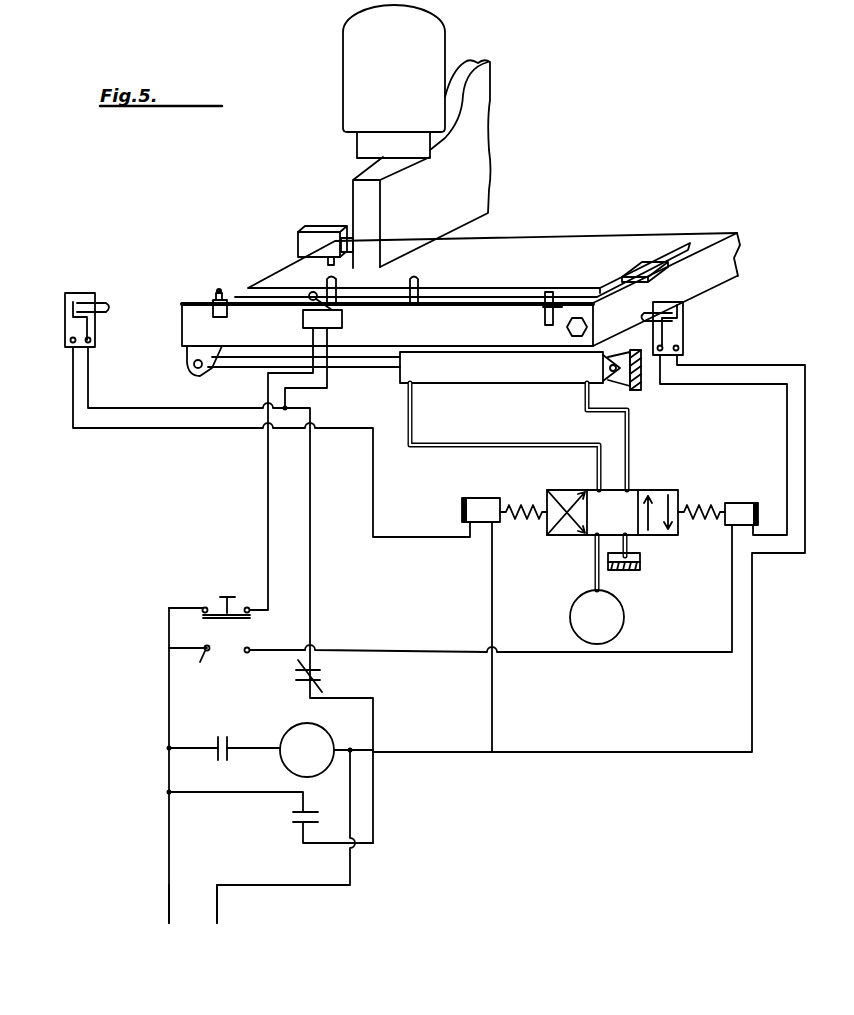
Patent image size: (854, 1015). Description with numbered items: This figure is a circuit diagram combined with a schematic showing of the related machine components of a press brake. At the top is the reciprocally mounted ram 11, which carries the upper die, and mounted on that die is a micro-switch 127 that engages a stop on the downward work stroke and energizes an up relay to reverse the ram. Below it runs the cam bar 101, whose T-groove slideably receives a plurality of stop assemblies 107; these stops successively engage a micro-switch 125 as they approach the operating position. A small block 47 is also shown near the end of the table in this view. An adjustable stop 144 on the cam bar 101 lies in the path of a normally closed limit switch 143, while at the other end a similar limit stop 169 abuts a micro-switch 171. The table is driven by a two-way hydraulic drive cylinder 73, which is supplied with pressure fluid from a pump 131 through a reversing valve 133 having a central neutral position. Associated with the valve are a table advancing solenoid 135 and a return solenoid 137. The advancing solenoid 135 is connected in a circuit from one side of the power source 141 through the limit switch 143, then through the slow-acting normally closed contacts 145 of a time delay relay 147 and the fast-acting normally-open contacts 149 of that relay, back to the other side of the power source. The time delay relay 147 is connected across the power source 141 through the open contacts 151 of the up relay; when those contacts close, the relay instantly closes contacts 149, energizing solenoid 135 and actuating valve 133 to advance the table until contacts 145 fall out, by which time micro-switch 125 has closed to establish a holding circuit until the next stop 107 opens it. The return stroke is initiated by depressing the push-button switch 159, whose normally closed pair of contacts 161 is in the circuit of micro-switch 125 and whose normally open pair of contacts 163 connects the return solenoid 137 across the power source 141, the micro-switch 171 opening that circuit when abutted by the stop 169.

The ram 11 is at (477, 135).
The stop block 47 is at (641, 268).
The two-way hydraulic drive cylinder 73 is at (483, 374).
The cam bar 101 is at (508, 322).
The stop assemblies 107 is at (328, 283).
The micro-switch 125 is at (346, 321).
The micro-switch 127 is at (330, 232).
The pump 131 is at (618, 621).
The reversing valve 133 is at (625, 516).
The table advancing solenoid 135 is at (478, 504).
The return solenoid 137 is at (742, 512).
The power source 141 is at (185, 918).
The limit switch 143 is at (67, 316).
The adjustable stop 144 is at (224, 306).
The slow-acting normally closed contacts 145 is at (322, 679).
The time delay relay 147 is at (290, 731).
The fast-acting normally-open contacts 149 is at (300, 821).
The open contacts 151 is at (215, 738).
The switch 159 is at (278, 637).
The normally closed contacts 161 is at (205, 608).
The normally open contacts 163 is at (199, 666).
The limit stop 169 is at (548, 298).
The micro-switch 171 is at (684, 318).